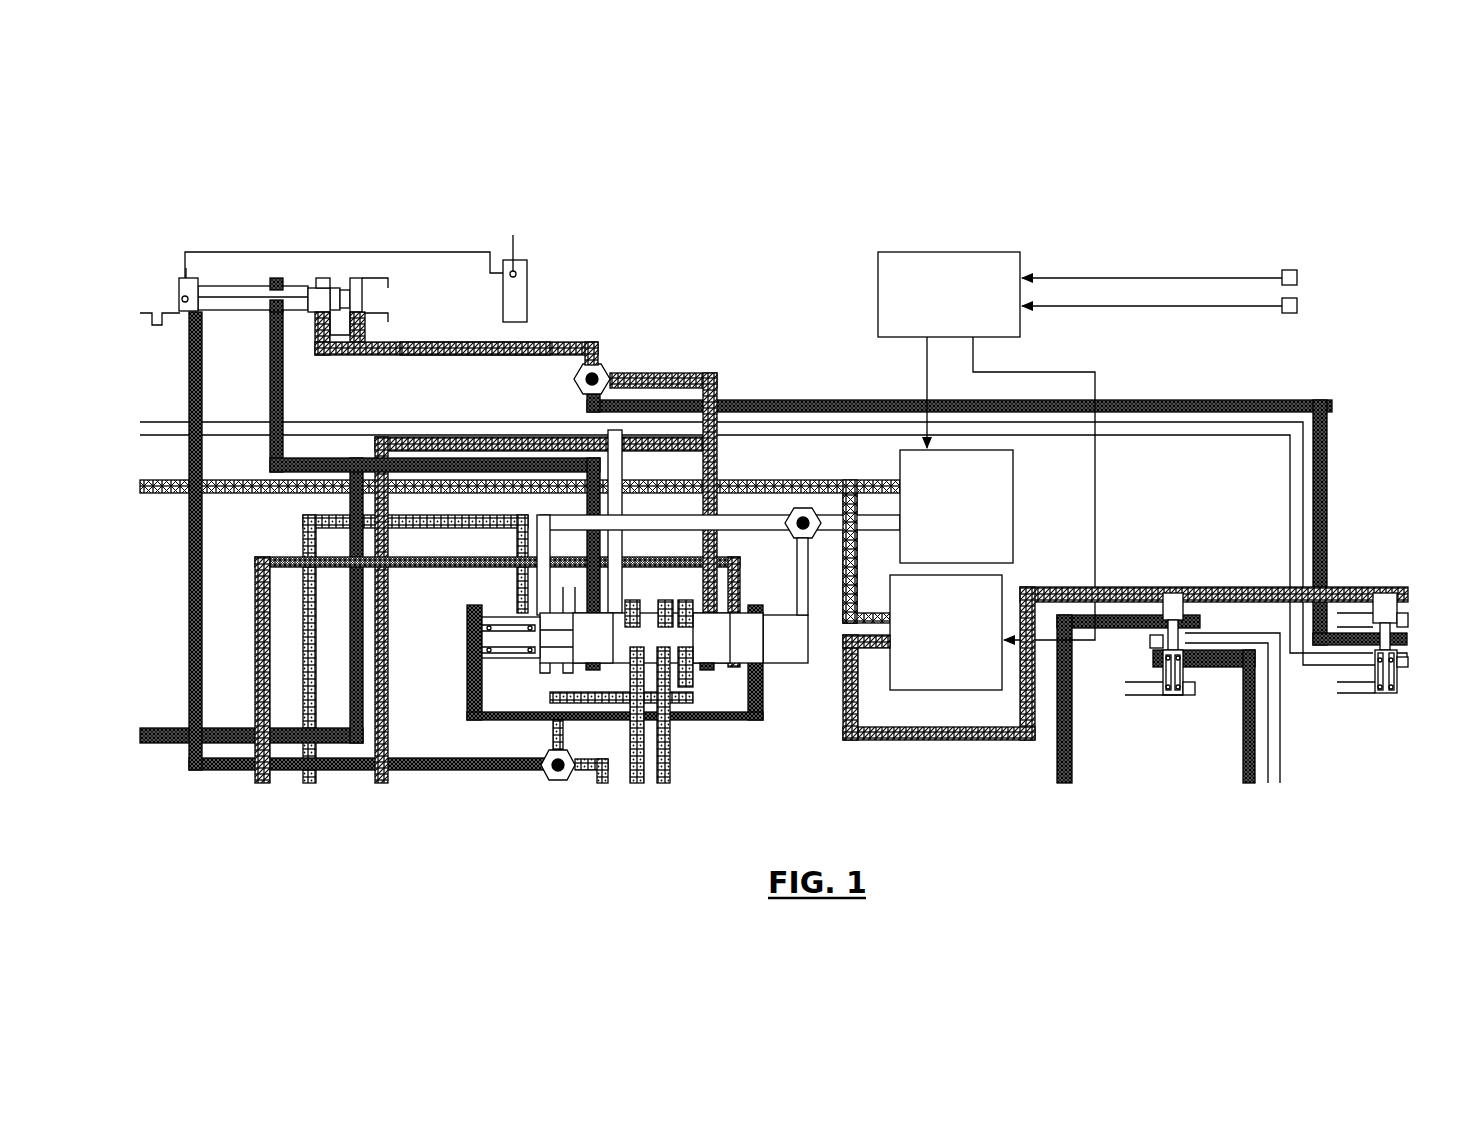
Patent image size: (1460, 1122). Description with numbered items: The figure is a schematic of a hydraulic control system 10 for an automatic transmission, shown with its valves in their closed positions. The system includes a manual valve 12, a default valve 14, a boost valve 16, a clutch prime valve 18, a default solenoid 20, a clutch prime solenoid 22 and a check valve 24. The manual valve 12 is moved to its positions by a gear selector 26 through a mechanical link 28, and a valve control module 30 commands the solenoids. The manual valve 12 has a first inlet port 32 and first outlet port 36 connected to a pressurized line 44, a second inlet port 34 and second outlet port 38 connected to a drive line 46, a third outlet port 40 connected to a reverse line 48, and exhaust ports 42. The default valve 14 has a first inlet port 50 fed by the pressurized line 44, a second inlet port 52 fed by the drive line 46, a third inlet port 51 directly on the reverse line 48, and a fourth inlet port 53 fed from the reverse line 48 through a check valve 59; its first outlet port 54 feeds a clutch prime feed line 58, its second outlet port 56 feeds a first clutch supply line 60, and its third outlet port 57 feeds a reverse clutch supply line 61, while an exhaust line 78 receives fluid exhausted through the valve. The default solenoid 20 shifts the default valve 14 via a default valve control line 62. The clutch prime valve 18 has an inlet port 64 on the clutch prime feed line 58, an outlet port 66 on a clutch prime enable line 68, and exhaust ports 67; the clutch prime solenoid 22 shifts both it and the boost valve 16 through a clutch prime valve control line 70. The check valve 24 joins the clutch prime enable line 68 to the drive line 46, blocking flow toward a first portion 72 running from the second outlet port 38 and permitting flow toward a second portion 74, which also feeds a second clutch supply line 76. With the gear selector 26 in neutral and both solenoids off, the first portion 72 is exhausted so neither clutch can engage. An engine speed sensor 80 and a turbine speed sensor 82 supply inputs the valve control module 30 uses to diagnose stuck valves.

The hydraulic control system 10 is at (1337, 126).
The manual valve 12 is at (335, 280).
The default valve 14 is at (601, 680).
The boost valve 16 is at (1189, 560).
The clutch prime valve 18 is at (1383, 622).
The default solenoid 20 is at (1017, 460).
The clutch prime solenoid 22 is at (1005, 582).
The check valve 24 is at (600, 365).
The gear selector 26 is at (540, 272).
The mechanical link 28 is at (287, 252).
The valve control module 30 is at (927, 250).
The first inlet port 32 is at (267, 275).
The second inlet port 34 is at (367, 315).
The first outlet port 36 is at (267, 315).
The second outlet port 38 is at (315, 315).
The third outlet port 40 is at (185, 322).
The exhaust ports 42 is at (390, 306).
The pressurized line 44 is at (283, 400).
The drive line 46 is at (438, 358).
The reverse line 48 is at (188, 392).
The first inlet port 50 is at (593, 617).
The third inlet port 51 is at (762, 668).
The second inlet port 52 is at (710, 615).
The fourth inlet port 53 is at (687, 667).
The first outlet port 54 is at (617, 615).
The second outlet port 56 is at (733, 615).
The third outlet port 57 is at (663, 673).
The clutch prime feed line 58 is at (620, 547).
The check valve 59 is at (555, 781).
The first clutch supply line 60 is at (432, 557).
The reverse clutch supply line 61 is at (670, 773).
The default valve control line 62 is at (733, 525).
The inlet port 64 is at (1370, 660).
The outlet port 66 is at (1371, 610).
The exhaust ports 67 is at (1376, 633).
The clutch prime enable line 68 is at (1330, 502).
The clutch prime valve control line 70 is at (1232, 585).
The first portion 72 is at (535, 340).
The second portion 74 is at (680, 372).
The second clutch supply line 76 is at (390, 673).
The exhaust line 78 is at (630, 773).
The engine speed sensor 80 is at (1298, 277).
The turbine speed sensor 82 is at (1298, 303).